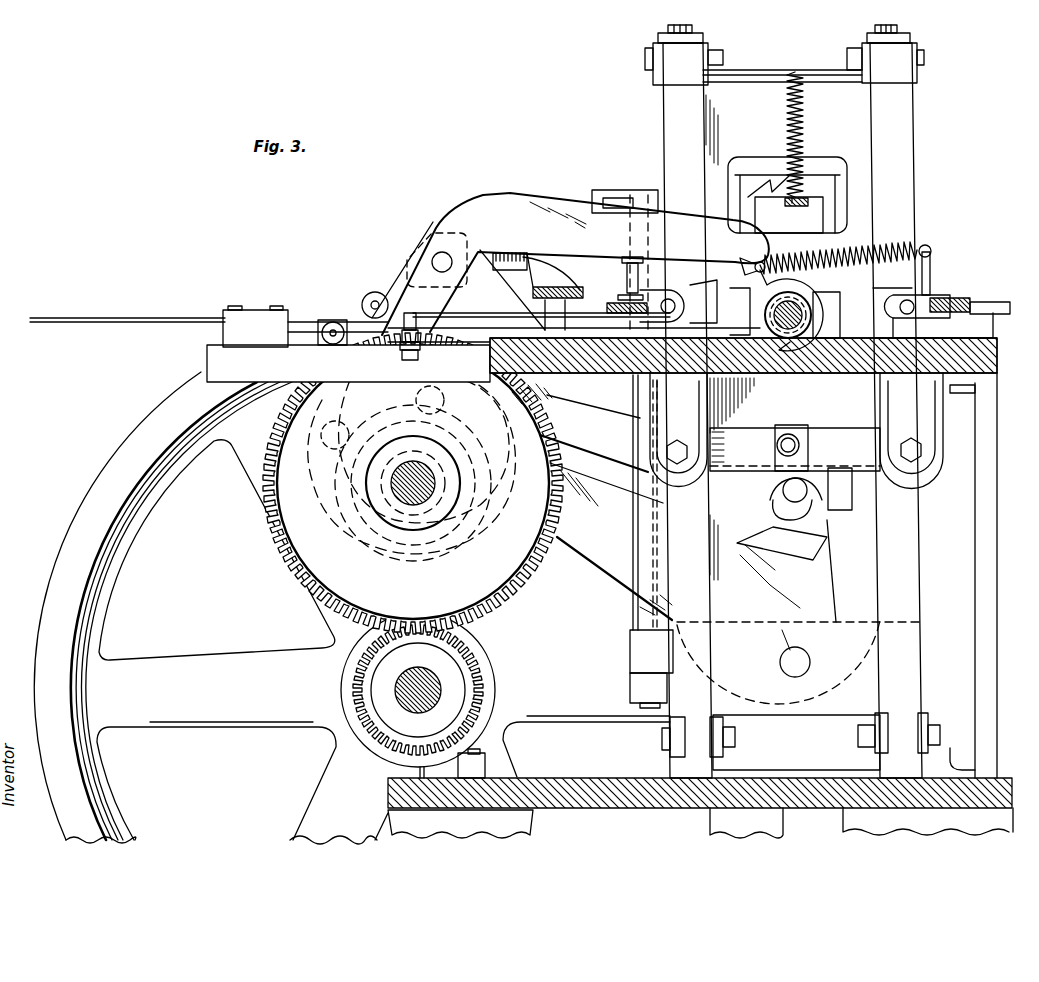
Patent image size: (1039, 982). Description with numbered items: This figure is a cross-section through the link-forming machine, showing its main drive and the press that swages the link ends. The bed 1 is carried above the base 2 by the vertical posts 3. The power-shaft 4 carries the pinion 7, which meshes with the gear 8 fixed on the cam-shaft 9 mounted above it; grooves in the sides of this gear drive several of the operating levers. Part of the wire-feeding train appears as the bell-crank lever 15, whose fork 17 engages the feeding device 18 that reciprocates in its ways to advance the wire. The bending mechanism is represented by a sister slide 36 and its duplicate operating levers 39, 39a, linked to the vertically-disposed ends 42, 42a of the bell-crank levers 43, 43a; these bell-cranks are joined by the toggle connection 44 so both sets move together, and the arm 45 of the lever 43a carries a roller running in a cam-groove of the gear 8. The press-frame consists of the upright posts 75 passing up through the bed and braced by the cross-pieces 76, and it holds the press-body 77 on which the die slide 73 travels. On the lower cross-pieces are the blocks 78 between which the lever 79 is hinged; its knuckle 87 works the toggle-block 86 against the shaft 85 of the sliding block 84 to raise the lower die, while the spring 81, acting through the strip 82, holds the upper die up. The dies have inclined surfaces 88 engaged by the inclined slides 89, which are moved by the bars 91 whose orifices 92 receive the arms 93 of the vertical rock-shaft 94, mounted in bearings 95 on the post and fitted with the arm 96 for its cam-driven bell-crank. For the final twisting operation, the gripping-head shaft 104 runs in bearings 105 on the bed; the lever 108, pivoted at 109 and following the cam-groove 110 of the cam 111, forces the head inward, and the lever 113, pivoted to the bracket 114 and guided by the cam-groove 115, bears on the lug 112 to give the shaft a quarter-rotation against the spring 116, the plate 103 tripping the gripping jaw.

The bed 1 is at (743, 371).
The base 2 is at (700, 790).
The vertical posts 3 is at (470, 765).
The power-shaft 4 is at (410, 700).
The pinion 7 is at (438, 690).
The gear 8 is at (450, 483).
The cam-shaft 9 is at (413, 505).
The bell-crank lever 15 is at (553, 275).
The fork 17 is at (505, 252).
The feeding device 18 is at (532, 304).
The sister slide 36 is at (1008, 300).
The lever 39 is at (958, 298).
The lever 39a is at (712, 262).
The vertically-disposed end of bell-crank lever 42 is at (893, 303).
The vertically-disposed end of bell-crank lever 42a is at (680, 308).
The bell-crank lever 43 is at (795, 449).
The bell-crank lever 43a is at (771, 448).
The toggle connection 44 is at (790, 438).
The arm 45 is at (576, 408).
The slide 73 is at (789, 215).
The upright posts 75 is at (793, 410).
The bracing cross-pieces 76 is at (664, 88).
The press-body 77 is at (787, 262).
The blocks 78 is at (798, 657).
The lever 79 is at (611, 541).
The spring 81 is at (805, 125).
The strip 82 is at (808, 203).
The sliding block 84 is at (825, 487).
The shaft 85 is at (806, 503).
The toggle-block 86 is at (810, 508).
The knuckle 87 is at (782, 525).
The inclined surfaces 88 is at (790, 195).
The inclined slides 89 is at (765, 186).
The bars 91 is at (642, 192).
The orifices 92 is at (606, 190).
The arms 93 is at (632, 448).
The vertical rock-shaft 94 is at (626, 281).
The bearings 95 is at (630, 652).
The arm 96 is at (630, 684).
The plate 103 is at (827, 290).
The shaft of gripping-head 104 is at (780, 340).
The bearings 105 is at (843, 311).
The lever 108 is at (617, 374).
The pivot 109 is at (541, 307).
The cam-groove 110 is at (407, 360).
The cam 111 is at (422, 467).
The lug 112 is at (714, 301).
The lever 113 is at (570, 264).
The bracket 114 is at (476, 281).
The cam-groove 115 is at (412, 467).
The spring 116 is at (900, 250).